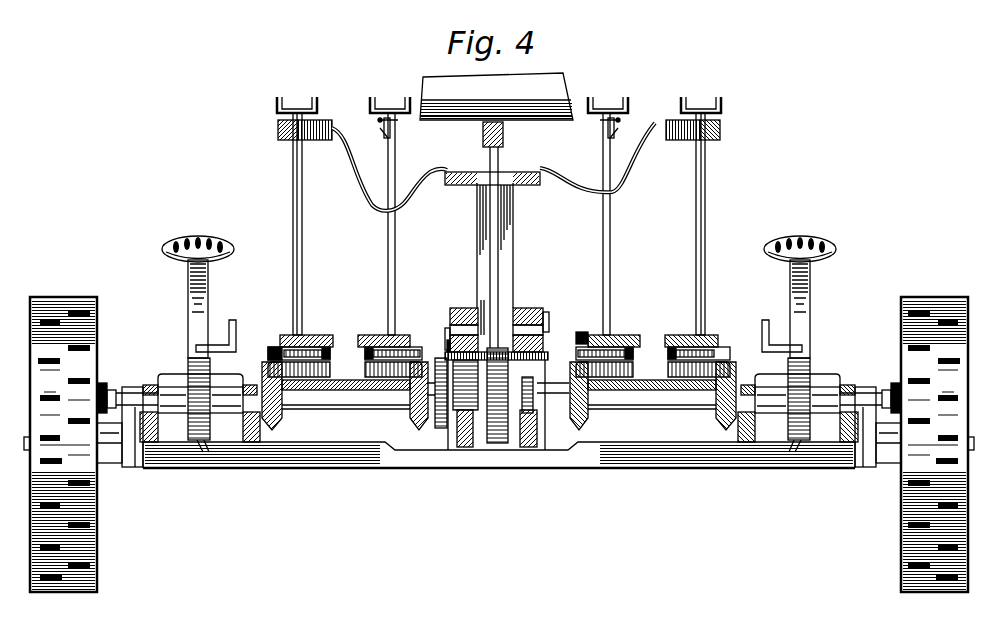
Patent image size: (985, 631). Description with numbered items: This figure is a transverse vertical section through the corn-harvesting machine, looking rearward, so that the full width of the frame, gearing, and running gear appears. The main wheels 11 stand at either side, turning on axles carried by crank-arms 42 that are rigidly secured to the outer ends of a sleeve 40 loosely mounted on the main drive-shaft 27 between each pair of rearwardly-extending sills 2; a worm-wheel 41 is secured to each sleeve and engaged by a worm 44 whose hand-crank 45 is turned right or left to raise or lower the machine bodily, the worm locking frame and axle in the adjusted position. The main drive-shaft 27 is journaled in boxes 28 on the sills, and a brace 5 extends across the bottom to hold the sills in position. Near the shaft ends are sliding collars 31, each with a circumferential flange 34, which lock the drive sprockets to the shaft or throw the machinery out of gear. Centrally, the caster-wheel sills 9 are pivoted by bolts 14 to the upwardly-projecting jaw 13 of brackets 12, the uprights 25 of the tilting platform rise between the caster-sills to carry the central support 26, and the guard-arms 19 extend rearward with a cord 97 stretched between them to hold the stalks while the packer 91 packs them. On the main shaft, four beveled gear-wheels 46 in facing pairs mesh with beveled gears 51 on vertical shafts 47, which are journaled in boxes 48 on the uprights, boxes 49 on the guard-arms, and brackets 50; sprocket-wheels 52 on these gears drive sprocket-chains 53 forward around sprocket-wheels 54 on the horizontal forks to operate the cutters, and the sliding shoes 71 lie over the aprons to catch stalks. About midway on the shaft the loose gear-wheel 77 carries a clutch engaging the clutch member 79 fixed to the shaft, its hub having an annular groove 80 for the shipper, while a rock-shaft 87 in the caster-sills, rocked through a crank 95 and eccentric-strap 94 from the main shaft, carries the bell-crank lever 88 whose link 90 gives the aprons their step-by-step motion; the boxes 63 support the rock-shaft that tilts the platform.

The rearwardly-extending sills 2 is at (740, 425).
The brace 5 is at (499, 455).
The caster-wheel sills 9 is at (532, 305).
The main wheels 11 is at (499, 444).
The brackets 12 is at (545, 436).
The upwardly-projecting jaw 13 is at (450, 334).
The bolts 14 is at (553, 348).
The guard-arms 19 is at (323, 141).
The uprights 25 is at (502, 232).
The central support 26 is at (513, 185).
The main drive-shaft 27 is at (668, 398).
The boxes 28 is at (148, 383).
The collars 31 is at (103, 382).
The circumferential flange 34 is at (112, 389).
The sleeve 40 is at (499, 400).
The worm-wheel 41 is at (496, 451).
The crank-arms 42 is at (128, 467).
The worm 44 is at (196, 362).
The hand-crank 45 is at (210, 348).
The beveled gear-wheels 46 is at (499, 396).
The vertical shafts 47 is at (388, 258).
The boxes 48 is at (362, 336).
The boxes 49 is at (315, 121).
The brackets 50 is at (395, 122).
The beveled gears 51 is at (499, 369).
The sprocket-wheels 52 is at (499, 353).
The sprocket-chains 53 is at (499, 346).
The sprocket-wheels 54 is at (583, 331).
The boxes 63 is at (273, 347).
The sliding shoes 71 is at (372, 395).
The gear-wheel 77 is at (498, 445).
The clutch member 79 is at (463, 385).
The annular groove 80 is at (545, 395).
The rock-shaft 87 is at (489, 313).
The bell-crank lever 88 is at (500, 275).
The link 90 is at (547, 310).
The packer 91 is at (507, 133).
The eccentric-strap 94 is at (435, 401).
The crank 95 is at (447, 348).
The cord 97 is at (493, 169).